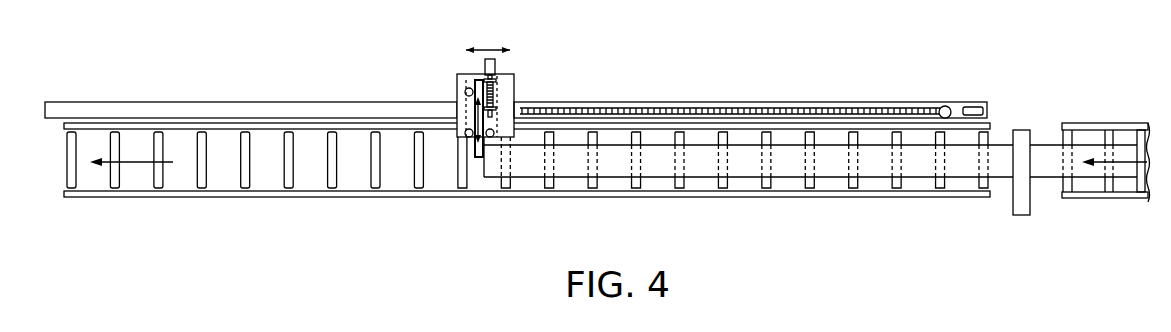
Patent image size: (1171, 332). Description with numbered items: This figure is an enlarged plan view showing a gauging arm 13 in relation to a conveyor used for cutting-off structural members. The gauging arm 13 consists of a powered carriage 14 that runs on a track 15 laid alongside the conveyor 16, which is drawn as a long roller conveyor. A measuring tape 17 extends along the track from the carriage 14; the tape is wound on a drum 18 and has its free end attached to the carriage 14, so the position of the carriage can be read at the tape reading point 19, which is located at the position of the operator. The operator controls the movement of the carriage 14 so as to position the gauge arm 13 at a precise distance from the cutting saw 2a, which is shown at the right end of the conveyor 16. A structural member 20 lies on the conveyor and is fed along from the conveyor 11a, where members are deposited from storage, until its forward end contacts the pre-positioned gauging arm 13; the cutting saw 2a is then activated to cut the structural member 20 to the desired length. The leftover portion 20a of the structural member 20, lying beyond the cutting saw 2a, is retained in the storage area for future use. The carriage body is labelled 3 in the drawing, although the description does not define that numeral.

The carriage block 3 is at (457, 80).
The gauging arm 13 is at (478, 158).
The powered carriage 14 is at (513, 74).
The track 15 is at (172, 101).
The conveyor 16 is at (177, 183).
The measuring tape 17 is at (566, 102).
The drum 18 is at (985, 107).
The tape reading point 19 is at (945, 106).
The structural member 20 is at (563, 178).
The leftover portion 20a is at (1042, 145).
The cutting saw 2a is at (1027, 215).
The conveyor 11a is at (1108, 198).